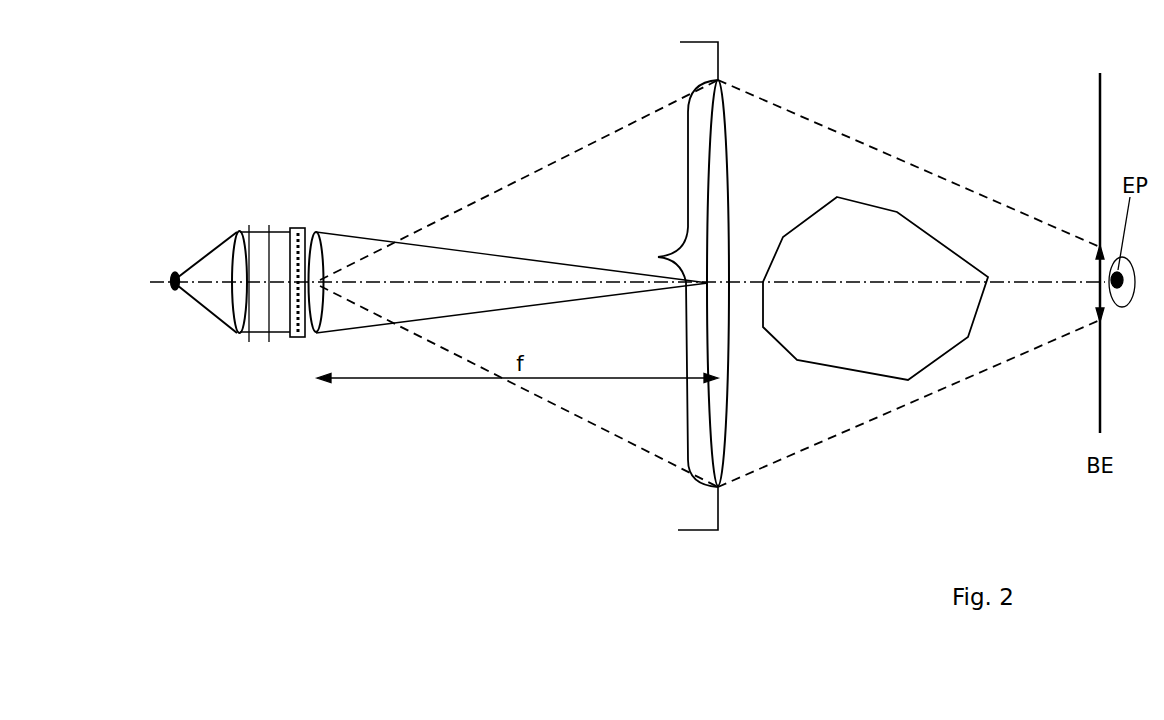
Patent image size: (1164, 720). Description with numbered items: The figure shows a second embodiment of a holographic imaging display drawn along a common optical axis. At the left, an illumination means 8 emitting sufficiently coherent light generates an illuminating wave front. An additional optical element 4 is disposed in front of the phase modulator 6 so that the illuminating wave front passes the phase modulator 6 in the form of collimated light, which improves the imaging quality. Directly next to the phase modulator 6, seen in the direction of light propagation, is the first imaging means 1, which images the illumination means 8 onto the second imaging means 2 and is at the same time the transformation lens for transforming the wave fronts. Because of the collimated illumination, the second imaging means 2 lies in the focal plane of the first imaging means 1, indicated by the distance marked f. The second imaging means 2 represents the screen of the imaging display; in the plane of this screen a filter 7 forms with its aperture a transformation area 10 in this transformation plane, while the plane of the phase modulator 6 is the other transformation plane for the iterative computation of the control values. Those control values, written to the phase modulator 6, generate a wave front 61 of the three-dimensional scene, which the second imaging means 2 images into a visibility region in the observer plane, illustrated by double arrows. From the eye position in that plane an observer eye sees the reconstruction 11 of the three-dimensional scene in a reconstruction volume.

The first imaging means 1 is at (322, 322).
The second imaging means 2 is at (720, 165).
The additional optical element 4 is at (243, 258).
The phase modulator 6 is at (298, 340).
The wave front 61 is at (298, 311).
The filter 7 is at (720, 72).
The illumination means 8 is at (177, 275).
The transformation area 10 is at (658, 257).
The reconstruction 11 is at (857, 217).